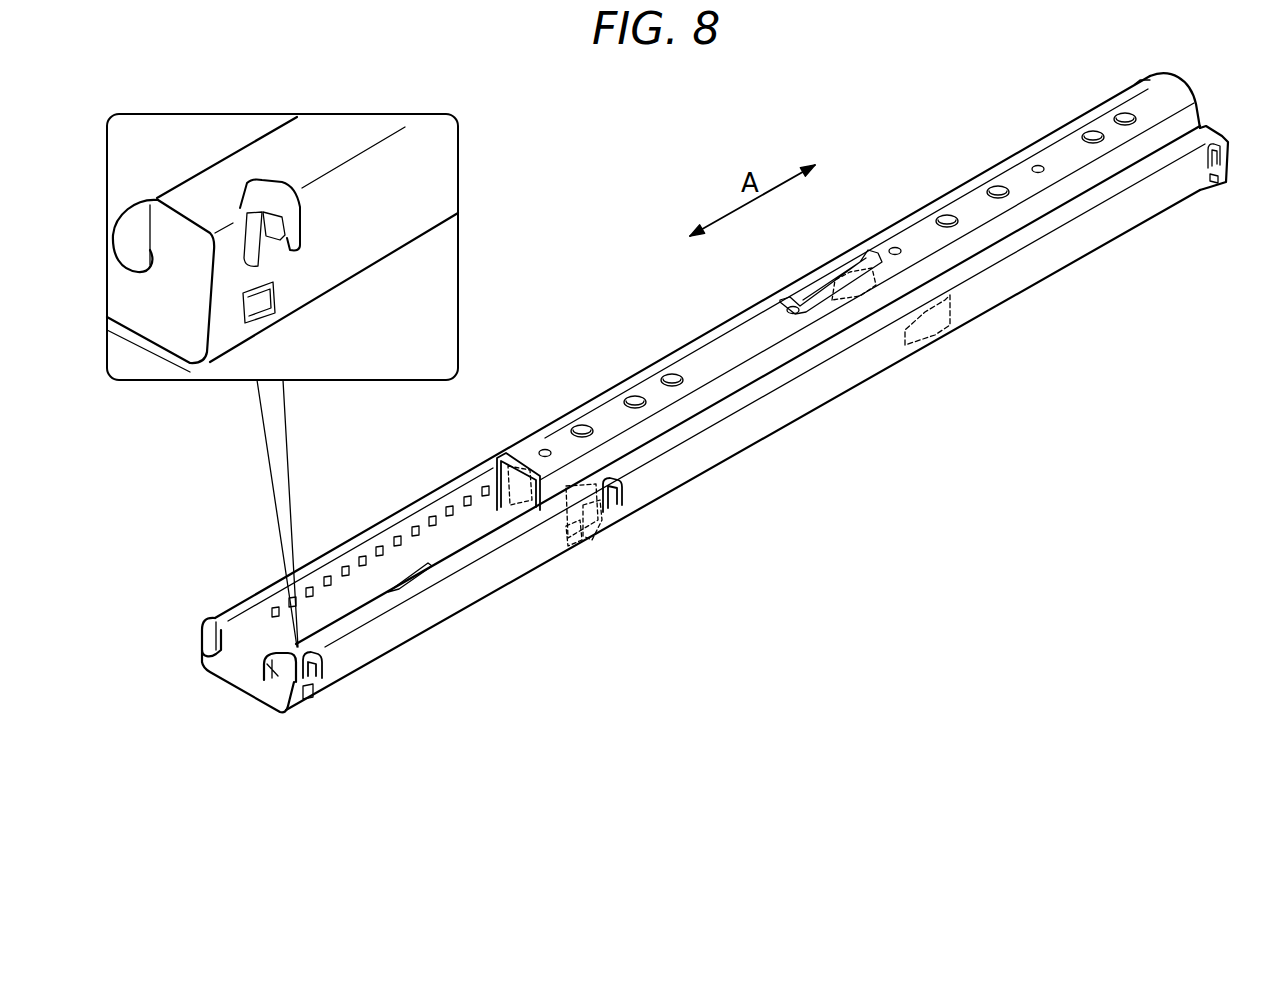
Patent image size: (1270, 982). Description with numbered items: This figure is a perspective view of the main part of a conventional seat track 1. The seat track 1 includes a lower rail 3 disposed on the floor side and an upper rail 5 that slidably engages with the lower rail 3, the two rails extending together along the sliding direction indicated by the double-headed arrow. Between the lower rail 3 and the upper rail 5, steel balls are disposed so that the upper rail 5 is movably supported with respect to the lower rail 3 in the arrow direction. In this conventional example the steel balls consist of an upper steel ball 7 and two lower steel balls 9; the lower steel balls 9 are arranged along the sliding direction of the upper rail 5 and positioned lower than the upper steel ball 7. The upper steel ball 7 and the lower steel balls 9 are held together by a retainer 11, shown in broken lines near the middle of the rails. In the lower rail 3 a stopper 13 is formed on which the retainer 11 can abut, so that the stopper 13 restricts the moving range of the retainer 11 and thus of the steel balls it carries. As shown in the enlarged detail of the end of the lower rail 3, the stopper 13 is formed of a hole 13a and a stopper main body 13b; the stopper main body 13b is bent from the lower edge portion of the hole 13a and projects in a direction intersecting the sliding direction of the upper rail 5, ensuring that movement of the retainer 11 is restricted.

The seat track 1 is at (667, 392).
The lower rail 3 is at (232, 192).
The upper rail 5 is at (735, 355).
The upper steel ball 7 is at (575, 530).
The lower steel balls 9 is at (592, 540).
The retainer 11 is at (576, 540).
The stopper 13 is at (345, 439).
The hole 13a is at (285, 223).
The stopper main body 13b is at (267, 235).